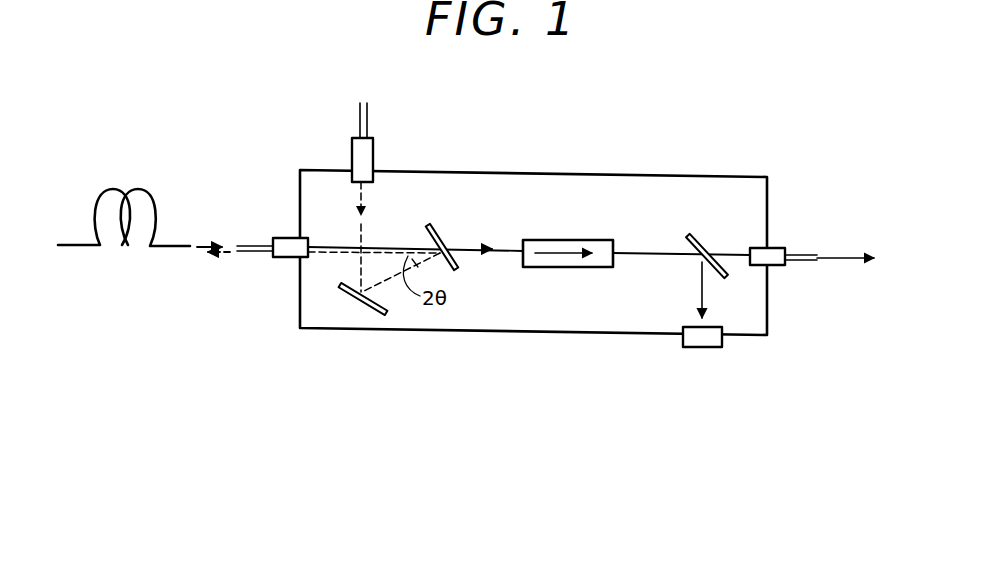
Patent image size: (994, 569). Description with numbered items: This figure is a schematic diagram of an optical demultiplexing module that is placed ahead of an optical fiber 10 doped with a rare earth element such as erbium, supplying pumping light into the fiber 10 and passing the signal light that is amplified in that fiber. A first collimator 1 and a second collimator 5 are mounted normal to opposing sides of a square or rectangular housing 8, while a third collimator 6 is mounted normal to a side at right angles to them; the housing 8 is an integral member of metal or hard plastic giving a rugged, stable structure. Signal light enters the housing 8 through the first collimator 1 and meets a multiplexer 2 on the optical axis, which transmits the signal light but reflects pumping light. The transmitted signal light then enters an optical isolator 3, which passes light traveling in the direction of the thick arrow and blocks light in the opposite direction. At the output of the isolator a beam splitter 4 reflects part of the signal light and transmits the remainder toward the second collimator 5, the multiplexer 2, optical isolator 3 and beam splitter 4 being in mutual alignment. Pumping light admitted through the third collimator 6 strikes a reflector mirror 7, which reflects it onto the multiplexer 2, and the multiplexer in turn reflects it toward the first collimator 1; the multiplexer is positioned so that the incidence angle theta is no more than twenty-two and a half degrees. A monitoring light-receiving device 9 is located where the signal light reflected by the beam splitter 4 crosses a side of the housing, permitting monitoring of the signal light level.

The first collimator 1 is at (285, 258).
The multiplexer 2 is at (441, 237).
The optical isolator 3 is at (538, 268).
The beam splitter 4 is at (700, 232).
The second collimator 5 is at (775, 268).
The third collimator 6 is at (374, 150).
The reflector mirror 7 is at (370, 315).
The housing 8 is at (767, 202).
The monitoring light-receiving device 9 is at (693, 348).
The optical fiber 10 is at (100, 200).